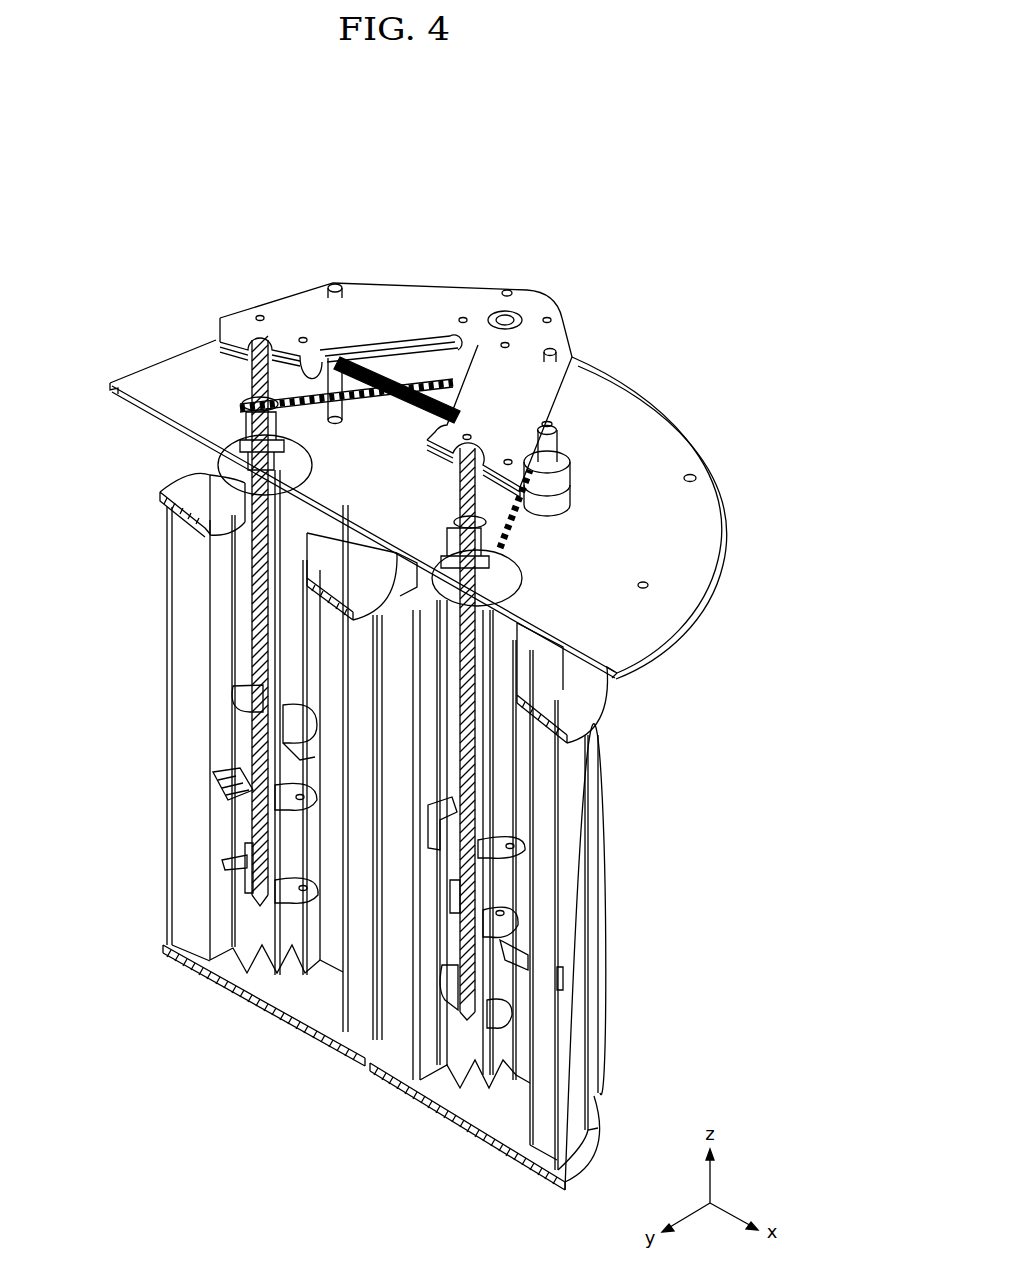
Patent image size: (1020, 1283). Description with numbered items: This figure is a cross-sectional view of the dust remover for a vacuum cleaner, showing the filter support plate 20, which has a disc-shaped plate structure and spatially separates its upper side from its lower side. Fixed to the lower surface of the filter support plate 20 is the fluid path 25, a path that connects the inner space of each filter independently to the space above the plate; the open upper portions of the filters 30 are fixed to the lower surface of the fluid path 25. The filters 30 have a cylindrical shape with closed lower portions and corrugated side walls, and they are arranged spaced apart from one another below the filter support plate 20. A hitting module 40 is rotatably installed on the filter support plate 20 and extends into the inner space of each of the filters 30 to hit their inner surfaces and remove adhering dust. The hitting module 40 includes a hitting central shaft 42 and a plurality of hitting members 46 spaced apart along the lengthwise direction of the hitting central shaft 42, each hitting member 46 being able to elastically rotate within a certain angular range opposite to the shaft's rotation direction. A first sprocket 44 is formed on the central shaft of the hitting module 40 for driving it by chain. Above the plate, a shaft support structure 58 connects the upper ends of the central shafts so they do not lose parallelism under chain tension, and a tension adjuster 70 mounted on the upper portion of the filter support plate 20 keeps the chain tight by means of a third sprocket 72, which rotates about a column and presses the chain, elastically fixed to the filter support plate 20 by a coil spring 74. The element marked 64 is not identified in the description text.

The filter support plate 20 is at (667, 457).
The fluid path 25 is at (230, 493).
The filters 30 is at (195, 877).
The hitting module 40 is at (218, 757).
The hitting central shaft 42 is at (250, 645).
The first sprocket 44 is at (276, 345).
The hitting member 46 is at (228, 797).
The shaft support structure 58 is at (530, 307).
The chain 64 is at (450, 378).
The tension adjuster 70 is at (562, 436).
The third sprocket 72 is at (588, 445).
The coil spring 74 is at (373, 378).